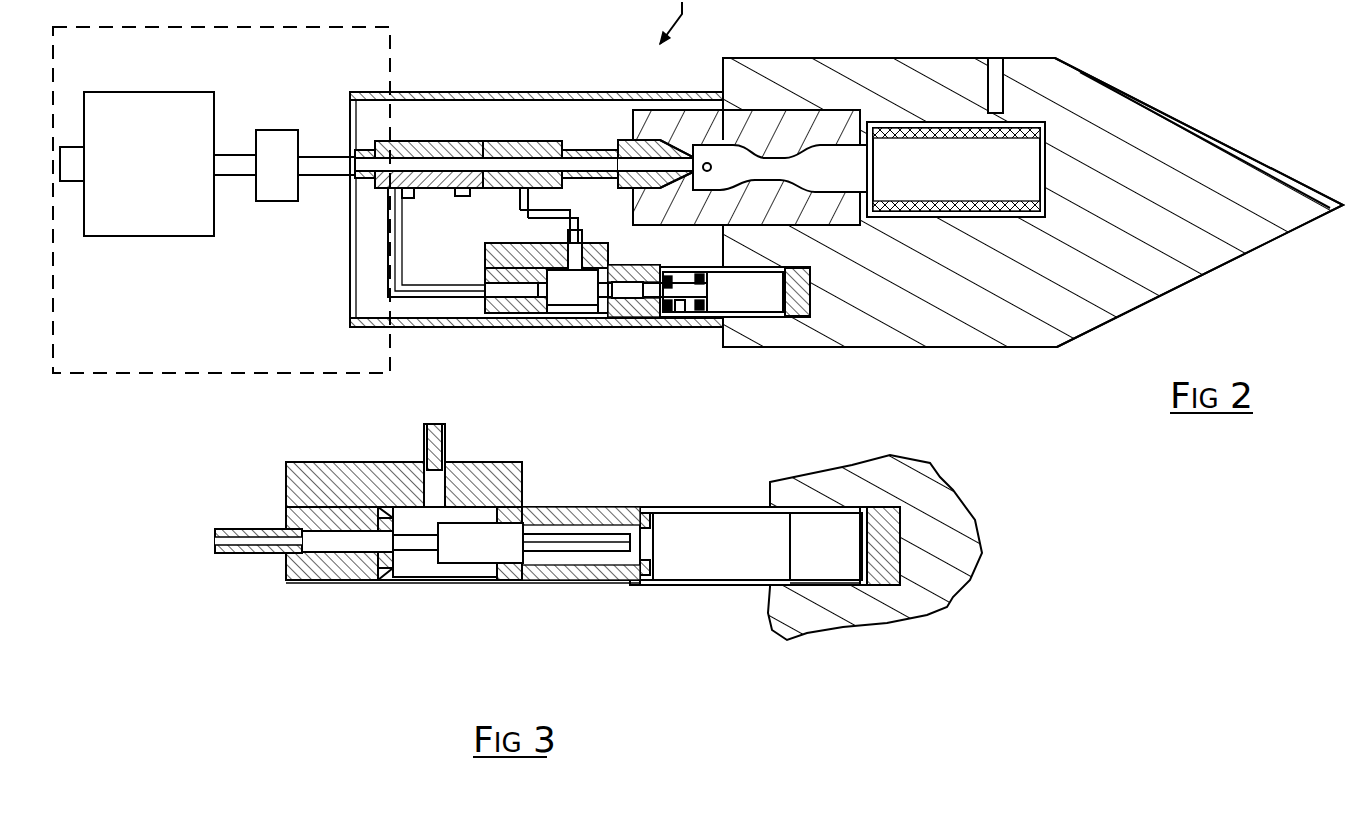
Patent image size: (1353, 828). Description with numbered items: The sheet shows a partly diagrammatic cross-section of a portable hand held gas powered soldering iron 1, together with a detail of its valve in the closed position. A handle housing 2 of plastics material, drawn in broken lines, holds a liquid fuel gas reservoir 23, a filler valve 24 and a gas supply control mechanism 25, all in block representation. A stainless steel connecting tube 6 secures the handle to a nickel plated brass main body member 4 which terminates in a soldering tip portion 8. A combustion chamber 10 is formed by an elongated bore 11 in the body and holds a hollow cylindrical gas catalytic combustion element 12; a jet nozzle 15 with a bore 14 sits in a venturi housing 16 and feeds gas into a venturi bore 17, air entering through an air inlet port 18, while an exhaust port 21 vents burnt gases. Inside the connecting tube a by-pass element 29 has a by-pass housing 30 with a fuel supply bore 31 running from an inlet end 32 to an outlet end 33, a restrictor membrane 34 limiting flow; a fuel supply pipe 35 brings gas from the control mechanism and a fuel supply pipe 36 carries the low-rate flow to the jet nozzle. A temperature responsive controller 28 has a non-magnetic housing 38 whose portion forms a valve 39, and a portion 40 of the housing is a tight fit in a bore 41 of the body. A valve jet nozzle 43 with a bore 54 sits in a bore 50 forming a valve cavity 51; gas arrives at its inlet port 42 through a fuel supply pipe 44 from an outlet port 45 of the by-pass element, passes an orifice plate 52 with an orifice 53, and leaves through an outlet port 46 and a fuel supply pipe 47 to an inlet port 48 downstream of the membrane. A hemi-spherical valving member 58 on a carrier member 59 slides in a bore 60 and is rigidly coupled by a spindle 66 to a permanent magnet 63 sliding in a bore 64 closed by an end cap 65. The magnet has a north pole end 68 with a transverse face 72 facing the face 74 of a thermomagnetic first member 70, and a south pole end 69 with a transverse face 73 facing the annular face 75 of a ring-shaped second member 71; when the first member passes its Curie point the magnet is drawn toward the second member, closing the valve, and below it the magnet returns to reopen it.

In FIG. 2, the soldering iron 1 is at (678, 22).
In FIG. 2, the handle housing 2 is at (107, 373).
In FIG. 2, the main body member 4 is at (1042, 333).
In FIG. 3, the main body member 4 is at (953, 580).
In FIG. 2, the connecting tube 6 is at (493, 100).
In FIG. 2, the soldering tip portion 8 is at (1181, 130).
In FIG. 2, the combustion chamber 10 is at (932, 122).
In FIG. 2, the elongated bore 11 is at (1040, 97).
In FIG. 2, the gas catalytic combustion element 12 is at (958, 130).
In FIG. 2, the bore 14 is at (660, 140).
In FIG. 2, the jet nozzle 15 is at (682, 146).
In FIG. 2, the venturi housing 16 is at (813, 130).
In FIG. 2, the venturi bore 17 is at (763, 147).
In FIG. 2, the air inlet port 18 is at (732, 112).
In FIG. 2, the exhaust port 21 is at (995, 100).
In FIG. 2, the liquid fuel gas reservoir 23 is at (135, 110).
In FIG. 2, the filler valve 24 is at (62, 182).
In FIG. 2, the gas supply control mechanism 25 is at (272, 140).
In FIG. 2, the temperature responsive controller 28 is at (610, 303).
In FIG. 3, the temperature responsive controller 28 is at (530, 573).
In FIG. 2, the by-pass element 29 is at (538, 141).
In FIG. 2, the by-pass housing 30 is at (513, 100).
In FIG. 2, the fuel supply bore 31 is at (440, 212).
In FIG. 2, the inlet end 32 is at (372, 160).
In FIG. 2, the outlet end 33 is at (572, 150).
In FIG. 2, the restrictor membrane 34 is at (478, 141).
In FIG. 2, the fuel supply pipe 35 is at (322, 178).
In FIG. 2, the fuel supply pipe 36 is at (612, 150).
In FIG. 2, the housing 38 is at (613, 265).
In FIG. 3, the housing 38 is at (512, 492).
In FIG. 2, the valve 39 is at (537, 313).
In FIG. 3, the valve 39 is at (367, 483).
In FIG. 2, the portion of the housing 40 is at (690, 318).
In FIG. 3, the portion of the housing 40 is at (720, 507).
In FIG. 2, the bore 41 is at (787, 320).
In FIG. 3, the bore 41 is at (807, 607).
In FIG. 2, the inlet port 42 is at (485, 305).
In FIG. 3, the inlet port 42 is at (287, 560).
In FIG. 2, the valve jet nozzle 43 is at (490, 300).
In FIG. 3, the valve jet nozzle 43 is at (340, 563).
In FIG. 2, the fuel supply pipe 44 is at (390, 233).
In FIG. 3, the fuel supply pipe 44 is at (223, 557).
In FIG. 2, the outlet port 45 is at (410, 188).
In FIG. 2, the outlet port 46 is at (585, 268).
In FIG. 3, the outlet port 46 is at (442, 433).
In FIG. 2, the fuel supply pipe 47 is at (557, 215).
In FIG. 3, the fuel supply pipe 47 is at (423, 438).
In FIG. 2, the inlet port 48 is at (522, 183).
In FIG. 2, the bore 50 is at (562, 243).
In FIG. 3, the bore 50 is at (380, 590).
In FIG. 2, the valve cavity 51 is at (562, 307).
In FIG. 3, the valve cavity 51 is at (457, 567).
In FIG. 2, the orifice plate 52 is at (517, 313).
In FIG. 3, the orifice plate 52 is at (392, 580).
In FIG. 2, the inlet fuel gas delivery orifice 53 is at (553, 292).
In FIG. 3, the inlet fuel gas delivery orifice 53 is at (385, 515).
In FIG. 2, the bore 54 is at (485, 258).
In FIG. 3, the bore 54 is at (320, 543).
In FIG. 2, the valving member 58 is at (567, 313).
In FIG. 3, the valving member 58 is at (400, 550).
In FIG. 2, the carrier member 59 is at (620, 313).
In FIG. 3, the carrier member 59 is at (480, 537).
In FIG. 2, the bore 60 is at (658, 320).
In FIG. 3, the bore 60 is at (567, 527).
In FIG. 2, the permanent magnet 63 is at (737, 315).
In FIG. 3, the permanent magnet 63 is at (717, 580).
In FIG. 2, the magnet means accommodating bore 64 is at (693, 320).
In FIG. 3, the magnet means accommodating bore 64 is at (820, 585).
In FIG. 2, the end cap 65 is at (800, 316).
In FIG. 3, the end cap 65 is at (873, 523).
In FIG. 2, the spindle 66 is at (680, 314).
In FIG. 3, the spindle 66 is at (583, 580).
In FIG. 2, the axial end 68 is at (758, 315).
In FIG. 3, the axial end 68 is at (785, 540).
In FIG. 2, the axial end 69 is at (711, 167).
In FIG. 3, the axial end 69 is at (662, 557).
In FIG. 2, the first member 70 is at (813, 287).
In FIG. 3, the first member 70 is at (890, 525).
In FIG. 2, the second member 71 is at (668, 274).
In FIG. 3, the second member 71 is at (643, 520).
In FIG. 2, the transverse face 72 is at (837, 317).
In FIG. 3, the transverse face 72 is at (793, 527).
In FIG. 2, the transverse face 73 is at (699, 273).
In FIG. 3, the transverse face 73 is at (625, 585).
In FIG. 2, the face 74 is at (770, 268).
In FIG. 3, the face 74 is at (853, 585).
In FIG. 2, the annular face 75 is at (678, 314).
In FIG. 3, the annular face 75 is at (663, 517).